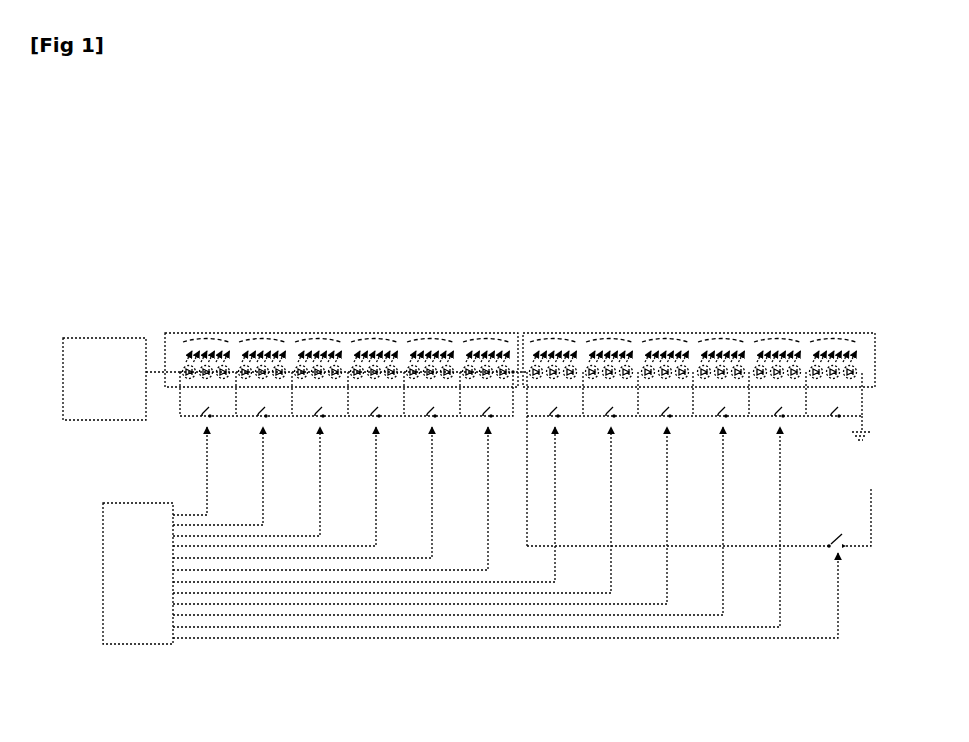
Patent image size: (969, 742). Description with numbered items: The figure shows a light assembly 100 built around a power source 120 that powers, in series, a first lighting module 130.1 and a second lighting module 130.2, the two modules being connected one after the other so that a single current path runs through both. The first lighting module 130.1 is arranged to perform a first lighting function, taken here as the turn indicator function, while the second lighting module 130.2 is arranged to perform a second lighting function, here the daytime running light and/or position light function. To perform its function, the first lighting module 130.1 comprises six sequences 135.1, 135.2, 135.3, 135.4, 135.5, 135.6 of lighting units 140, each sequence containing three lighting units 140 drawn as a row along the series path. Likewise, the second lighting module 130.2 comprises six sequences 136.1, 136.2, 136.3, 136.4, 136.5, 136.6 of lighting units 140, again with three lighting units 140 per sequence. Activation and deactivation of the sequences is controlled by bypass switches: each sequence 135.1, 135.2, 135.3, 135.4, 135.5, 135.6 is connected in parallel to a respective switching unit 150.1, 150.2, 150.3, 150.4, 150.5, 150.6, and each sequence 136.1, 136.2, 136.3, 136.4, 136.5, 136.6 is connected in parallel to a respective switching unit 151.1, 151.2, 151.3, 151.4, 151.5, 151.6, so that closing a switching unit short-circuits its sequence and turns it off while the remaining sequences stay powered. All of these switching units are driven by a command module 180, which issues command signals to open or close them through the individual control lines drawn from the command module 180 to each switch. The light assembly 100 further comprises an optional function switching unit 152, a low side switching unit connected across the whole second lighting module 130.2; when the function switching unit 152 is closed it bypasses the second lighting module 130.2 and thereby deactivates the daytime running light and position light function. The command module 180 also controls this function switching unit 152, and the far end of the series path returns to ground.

The light assembly 100 is at (487, 256).
The power source 120 is at (75, 338).
The first lighting module 130.1 is at (175, 333).
The second lighting module 130.2 is at (535, 333).
The sequence of lighting units 135.1 is at (208, 340).
The sequence of lighting units 135.2 is at (264, 340).
The sequence of lighting units 135.3 is at (320, 340).
The sequence of lighting units 135.4 is at (376, 340).
The sequence of lighting units 135.5 is at (432, 340).
The sequence of lighting units 135.6 is at (488, 340).
The sequence of lighting units 136.1 is at (555, 340).
The sequence of lighting units 136.2 is at (611, 340).
The sequence of lighting units 136.3 is at (667, 340).
The sequence of lighting units 136.4 is at (723, 340).
The sequence of lighting units 136.5 is at (779, 340).
The sequence of lighting units 136.6 is at (835, 340).
The lighting unit 140 is at (852, 378).
The switching unit 150.1 is at (212, 424).
The switching unit 150.2 is at (268, 424).
The switching unit 150.3 is at (325, 424).
The switching unit 150.4 is at (381, 424).
The switching unit 150.5 is at (437, 424).
The switching unit 150.6 is at (493, 424).
The switching unit 151.1 is at (560, 424).
The switching unit 151.2 is at (616, 424).
The switching unit 151.3 is at (672, 424).
The switching unit 151.4 is at (728, 424).
The switching unit 151.5 is at (785, 424).
The switching unit 151.6 is at (841, 424).
The function switching unit 152 is at (848, 552).
The command module 180 is at (145, 645).